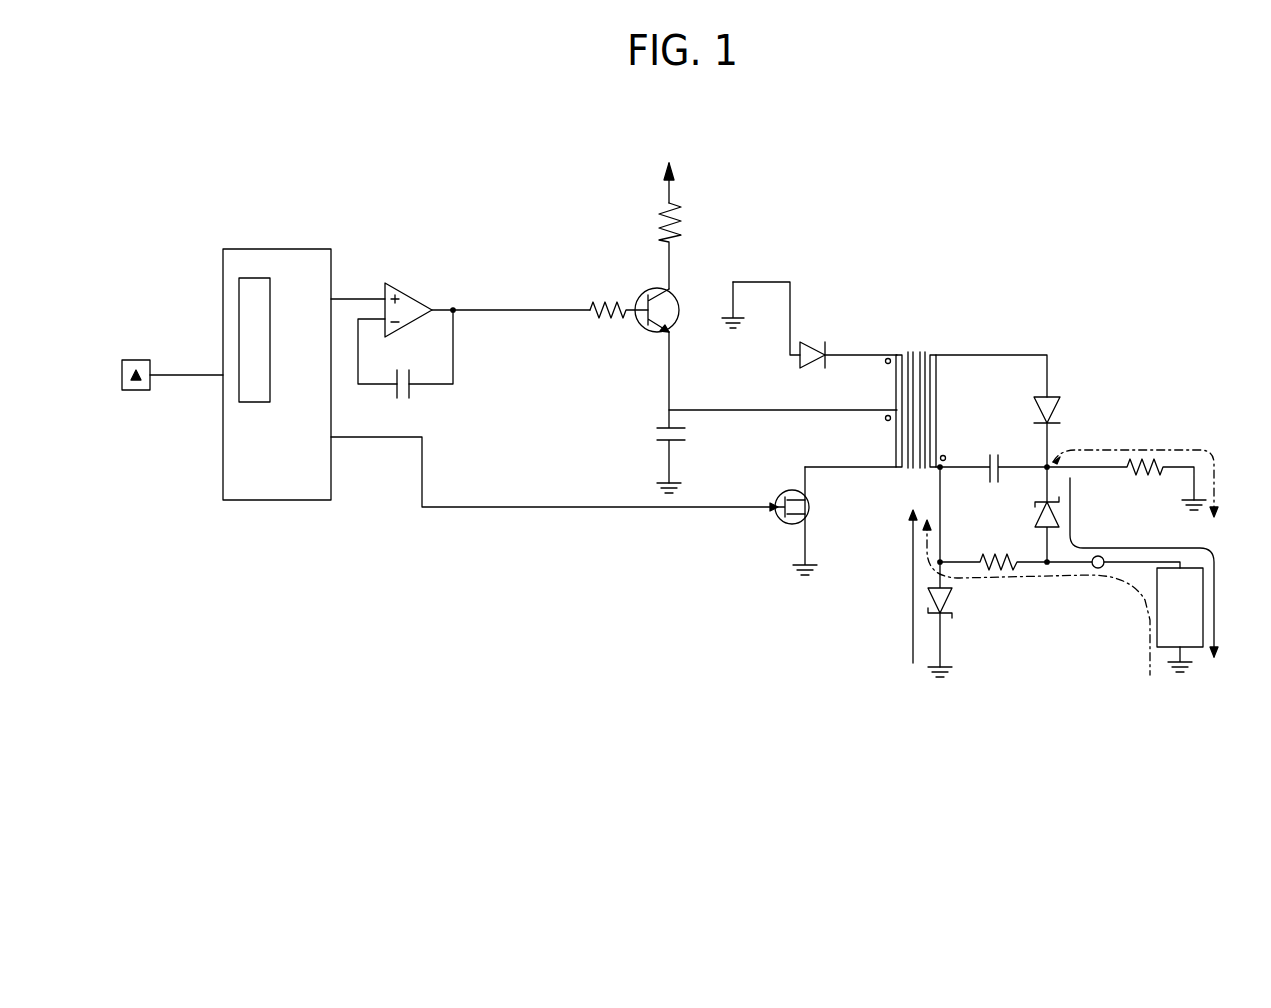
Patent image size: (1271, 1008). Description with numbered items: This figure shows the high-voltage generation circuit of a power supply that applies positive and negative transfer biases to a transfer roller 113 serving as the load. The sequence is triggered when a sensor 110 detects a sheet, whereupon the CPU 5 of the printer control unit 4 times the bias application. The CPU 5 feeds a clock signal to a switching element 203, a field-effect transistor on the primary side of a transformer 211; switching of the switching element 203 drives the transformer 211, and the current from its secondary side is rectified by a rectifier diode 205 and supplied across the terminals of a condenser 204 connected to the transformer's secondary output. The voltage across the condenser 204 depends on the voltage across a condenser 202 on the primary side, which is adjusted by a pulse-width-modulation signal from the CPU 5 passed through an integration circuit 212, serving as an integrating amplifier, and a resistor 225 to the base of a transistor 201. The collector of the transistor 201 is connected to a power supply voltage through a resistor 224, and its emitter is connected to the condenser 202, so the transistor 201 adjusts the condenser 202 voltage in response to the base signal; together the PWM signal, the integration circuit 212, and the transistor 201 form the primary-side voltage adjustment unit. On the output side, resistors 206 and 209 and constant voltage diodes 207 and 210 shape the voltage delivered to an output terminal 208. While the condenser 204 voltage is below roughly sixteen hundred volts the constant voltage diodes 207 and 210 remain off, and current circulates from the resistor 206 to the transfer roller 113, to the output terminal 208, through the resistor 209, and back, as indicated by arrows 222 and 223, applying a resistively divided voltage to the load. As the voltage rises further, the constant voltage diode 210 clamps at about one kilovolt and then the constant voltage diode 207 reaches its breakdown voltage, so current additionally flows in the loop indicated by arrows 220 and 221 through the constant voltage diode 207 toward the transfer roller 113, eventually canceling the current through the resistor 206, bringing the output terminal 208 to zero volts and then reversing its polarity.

The printer control unit 4 is at (277, 500).
The CPU 5 is at (239, 290).
The sensor 110 is at (137, 390).
The transfer roller 113 is at (1204, 603).
The transistor 201 is at (648, 331).
The condenser 202 is at (657, 434).
The switching element 203 is at (782, 524).
The condenser 204 is at (992, 453).
The rectifier diode 205 is at (1062, 407).
The resistor 206 is at (1148, 457).
The constant voltage diode 207 is at (1034, 515).
The output terminal 208 is at (1102, 570).
The resistor 209 is at (1002, 571).
The constant voltage diode 210 is at (948, 605).
The transformer 211 is at (912, 352).
The integration circuit 212 is at (405, 287).
The arrow 220 is at (1072, 508).
The arrow 221 is at (910, 587).
The arrow 222 is at (1220, 462).
The arrow 223 is at (1148, 668).
The resistor 224 is at (683, 214).
The resistor 225 is at (610, 301).